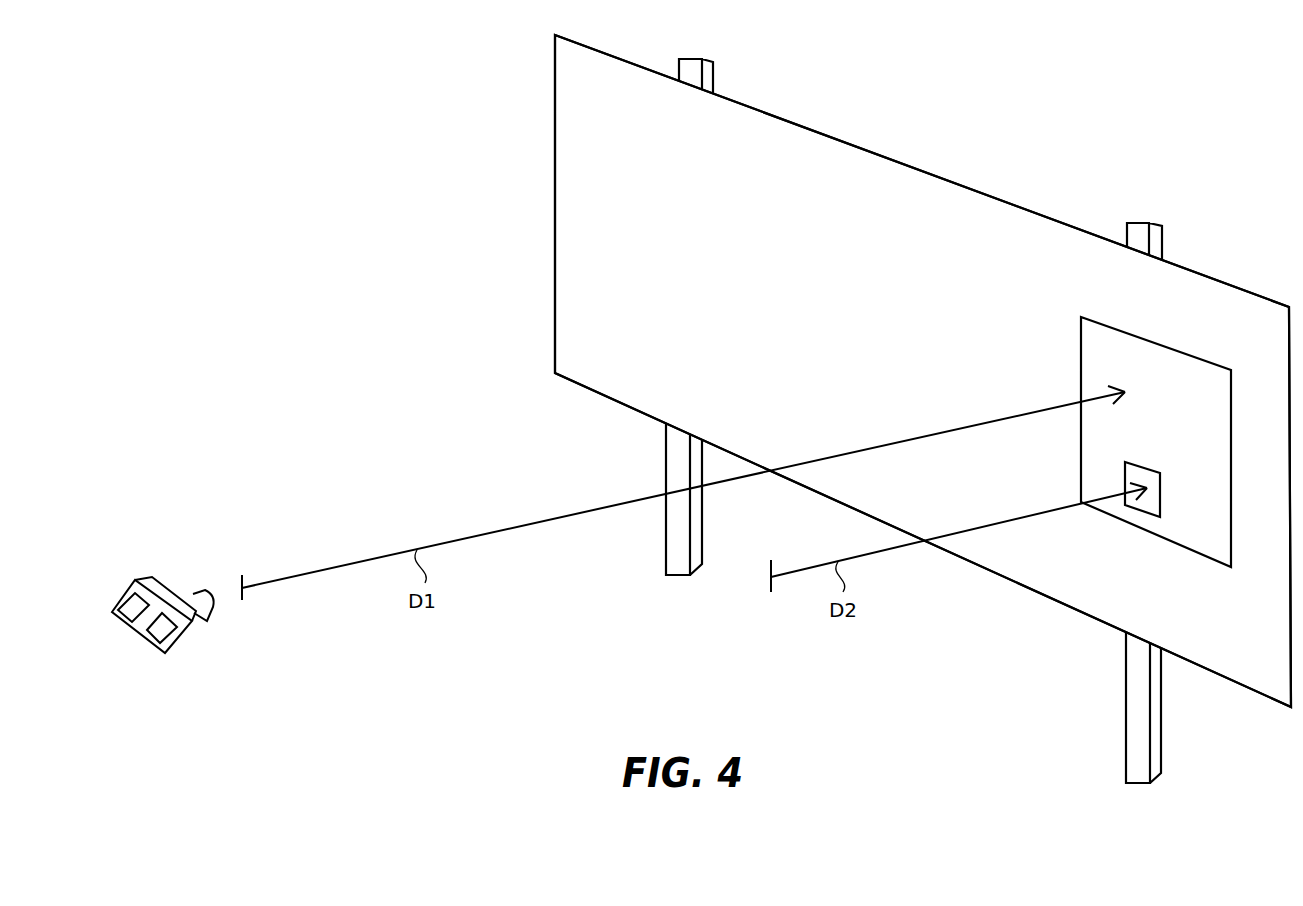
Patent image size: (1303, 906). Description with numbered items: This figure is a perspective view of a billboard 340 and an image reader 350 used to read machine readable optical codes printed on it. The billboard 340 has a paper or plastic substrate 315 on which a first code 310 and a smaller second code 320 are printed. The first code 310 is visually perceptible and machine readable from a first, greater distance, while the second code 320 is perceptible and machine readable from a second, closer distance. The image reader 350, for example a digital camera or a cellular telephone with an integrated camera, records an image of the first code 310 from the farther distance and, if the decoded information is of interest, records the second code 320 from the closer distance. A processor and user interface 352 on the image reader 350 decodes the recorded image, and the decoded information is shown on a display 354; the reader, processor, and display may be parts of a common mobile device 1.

The display system 1 is at (1028, 624).
The first code 310 is at (1078, 349).
The substrate 315 is at (659, 274).
The second code 320 is at (1143, 517).
The billboard 340 is at (553, 255).
The image reader 350 is at (151, 620).
The processor and user interface 352 is at (158, 637).
The display 354 is at (120, 622).